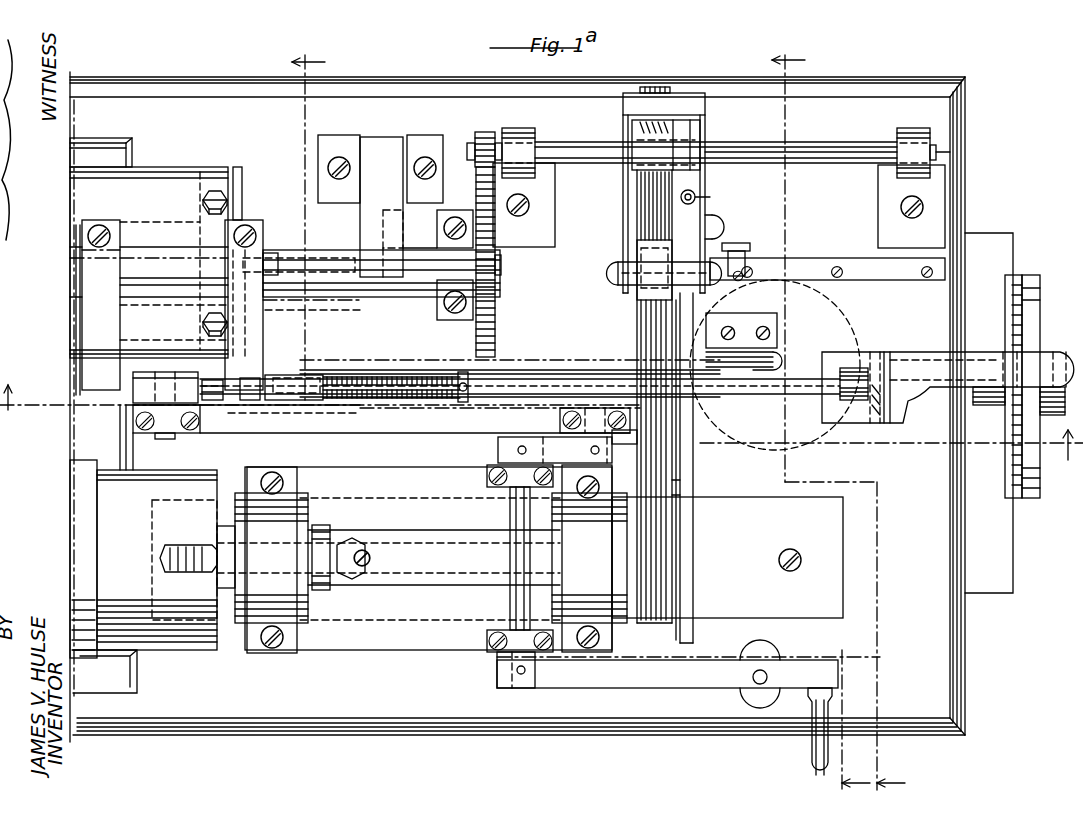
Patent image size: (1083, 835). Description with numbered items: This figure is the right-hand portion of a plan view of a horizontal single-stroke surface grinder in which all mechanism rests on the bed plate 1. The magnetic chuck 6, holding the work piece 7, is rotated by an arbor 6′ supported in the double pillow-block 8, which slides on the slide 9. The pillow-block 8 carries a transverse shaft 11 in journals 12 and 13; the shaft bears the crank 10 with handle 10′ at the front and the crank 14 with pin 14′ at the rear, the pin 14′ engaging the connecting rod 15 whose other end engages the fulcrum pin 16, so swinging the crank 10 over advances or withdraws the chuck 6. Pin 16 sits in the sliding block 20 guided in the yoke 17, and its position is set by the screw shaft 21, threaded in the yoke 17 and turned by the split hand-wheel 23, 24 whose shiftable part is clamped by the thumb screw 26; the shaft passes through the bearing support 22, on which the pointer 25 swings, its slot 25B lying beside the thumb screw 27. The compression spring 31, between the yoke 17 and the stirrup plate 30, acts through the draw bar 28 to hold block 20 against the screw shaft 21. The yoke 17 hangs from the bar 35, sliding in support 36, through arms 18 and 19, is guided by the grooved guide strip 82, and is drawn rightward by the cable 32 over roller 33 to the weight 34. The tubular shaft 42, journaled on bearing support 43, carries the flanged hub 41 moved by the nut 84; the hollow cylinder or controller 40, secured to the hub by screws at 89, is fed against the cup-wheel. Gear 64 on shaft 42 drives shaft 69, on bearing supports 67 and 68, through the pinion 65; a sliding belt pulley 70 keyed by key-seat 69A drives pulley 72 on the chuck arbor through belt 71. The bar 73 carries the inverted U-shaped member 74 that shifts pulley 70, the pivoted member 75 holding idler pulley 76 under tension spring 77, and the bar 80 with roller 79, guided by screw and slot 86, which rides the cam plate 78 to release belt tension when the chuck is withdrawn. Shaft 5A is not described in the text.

The bed plate 1 is at (398, 718).
The shaft 5A is at (500, 265).
The magnetic chuck 6 is at (128, 537).
The arbor 6′ is at (462, 568).
The work piece 7 is at (598, 429).
The double pillow-block 8 is at (356, 640).
The slide 9 is at (836, 556).
The crank 10 is at (682, 676).
The handle 10′ is at (812, 768).
The transverse shaft 11 is at (516, 608).
The journal 12 is at (498, 648).
The journal 13 is at (508, 486).
The crank 14 is at (555, 450).
The pin 14′ is at (612, 436).
The connecting rod 15 is at (398, 425).
The pin 16 is at (172, 436).
The yoke 17 is at (250, 348).
The connecting arm 18 is at (258, 232).
The connecting arm 19 is at (84, 240).
The sliding block 20 is at (138, 380).
The screw shaft 21 is at (580, 375).
The bearing support 22 is at (884, 423).
The hand-wheel part 23 is at (1008, 500).
The hand-wheel part 24 is at (1030, 498).
The pointer 25 is at (988, 379).
The slot 25B is at (864, 405).
The thumb screw 26 is at (1060, 352).
The thumb screw 27 is at (846, 392).
The draw bar 28 is at (422, 390).
The stirrup plate 30 is at (468, 395).
The compression spring 31 is at (392, 375).
The cable 32 is at (522, 368).
The roller 33 is at (777, 362).
The weight 34 is at (840, 308).
The bar 35 is at (72, 285).
The support 36 is at (380, 206).
The hollow cylinder (controller) 40 is at (135, 196).
The flanged hub 41 is at (242, 198).
The tubular shaft 42 is at (346, 296).
The bearing support 43 is at (455, 320).
The gear 64 is at (493, 330).
The pinion 65 is at (480, 135).
The bearing support 67 is at (530, 132).
The bearing support 68 is at (912, 130).
The shaft 69 is at (818, 136).
The key-seat 69A is at (832, 158).
The belt pulley 70 is at (640, 210).
The belt 71 is at (663, 462).
The belt pulley 72 is at (657, 498).
The bar 73 is at (694, 583).
The inverted U-shaped member 74 is at (632, 128).
The U-shaped member 75 is at (706, 113).
The idler pulley 76 is at (640, 295).
The tension spring 77 is at (696, 196).
The cam plate 78 is at (908, 276).
The roller 79 is at (750, 262).
The bar 80 is at (745, 246).
The grooved guide strip 82 is at (318, 418).
The nut 84 is at (300, 268).
The screw and slot 86 is at (720, 226).
The screw 89 is at (217, 195).